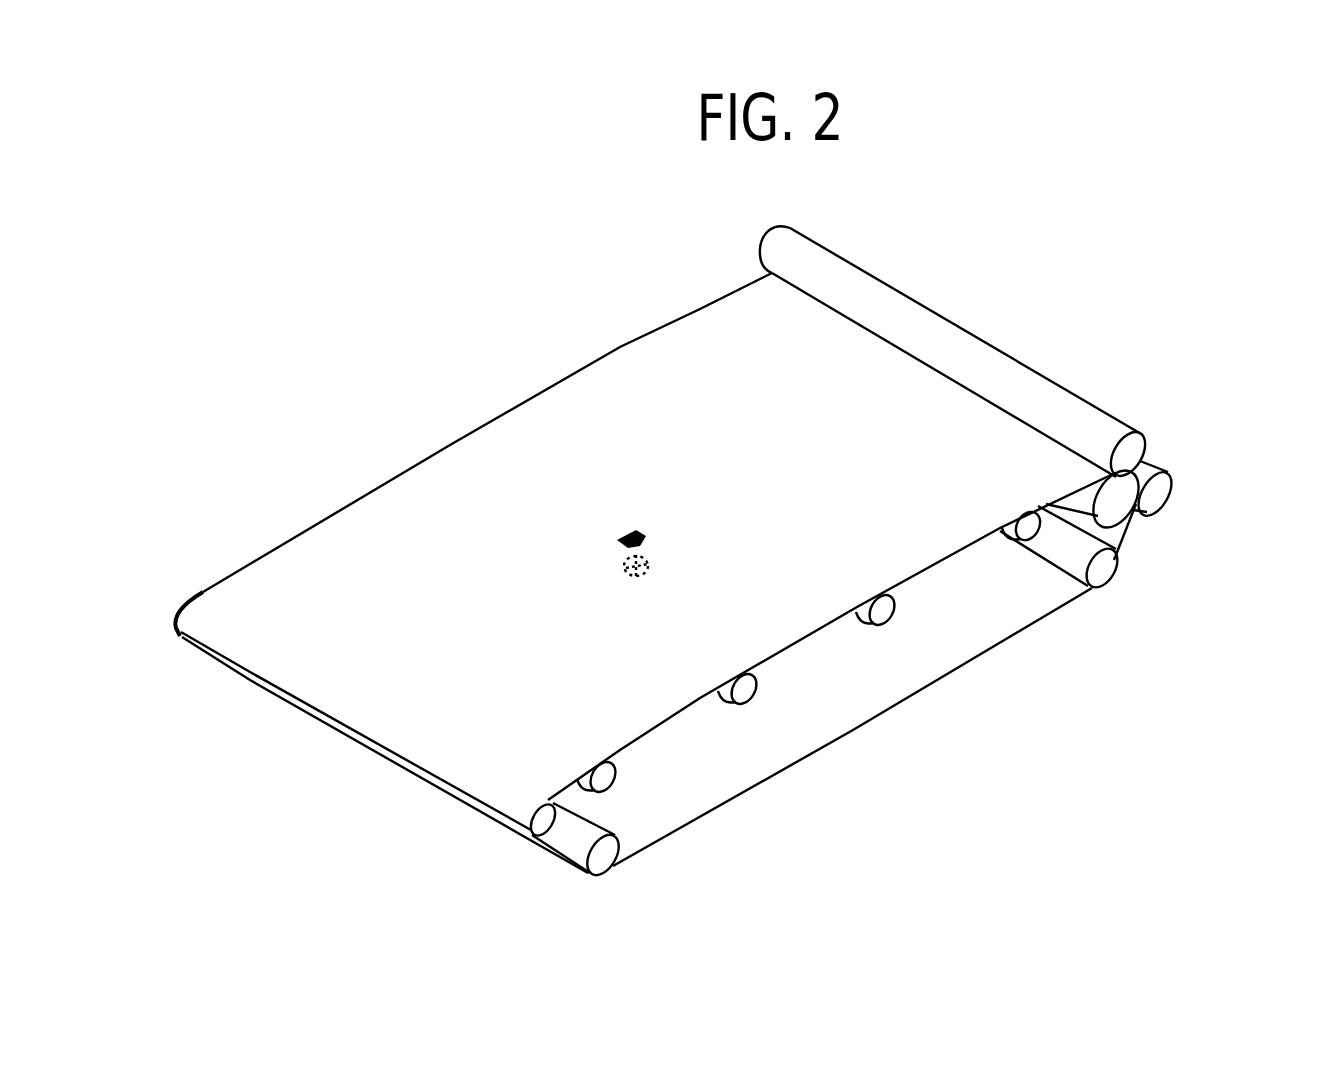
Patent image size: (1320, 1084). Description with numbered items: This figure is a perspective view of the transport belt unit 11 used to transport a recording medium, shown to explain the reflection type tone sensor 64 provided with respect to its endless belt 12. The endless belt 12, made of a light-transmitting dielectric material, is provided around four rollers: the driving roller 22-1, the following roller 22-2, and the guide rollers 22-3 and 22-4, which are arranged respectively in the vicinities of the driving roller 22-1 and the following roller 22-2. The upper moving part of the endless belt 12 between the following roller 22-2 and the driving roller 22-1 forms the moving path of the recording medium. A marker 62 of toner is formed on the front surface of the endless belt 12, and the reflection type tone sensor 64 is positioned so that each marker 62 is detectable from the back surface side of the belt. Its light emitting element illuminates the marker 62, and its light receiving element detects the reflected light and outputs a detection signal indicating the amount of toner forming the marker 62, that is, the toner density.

The transport belt unit 11 is at (606, 338).
The endless belt 12 is at (397, 495).
The driving roller 22-1 is at (543, 826).
The following roller 22-2 is at (1131, 449).
The guide roller 22-3 is at (606, 866).
The guide roller 22-4 is at (1104, 572).
The marker 62 is at (642, 533).
The reflection type tone sensor 64 is at (652, 566).